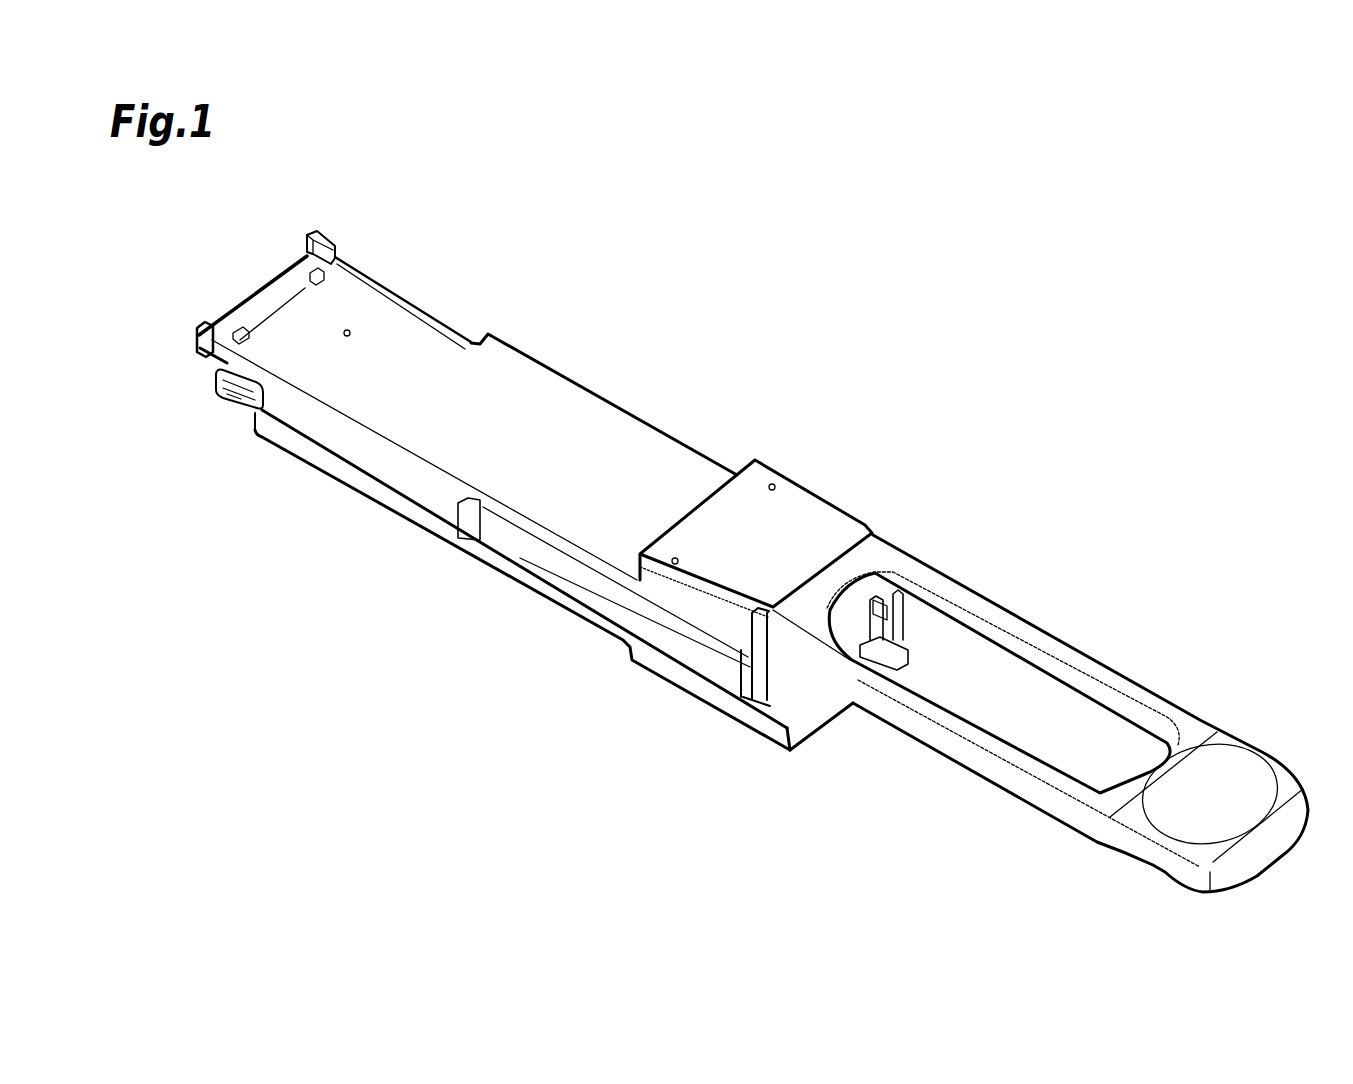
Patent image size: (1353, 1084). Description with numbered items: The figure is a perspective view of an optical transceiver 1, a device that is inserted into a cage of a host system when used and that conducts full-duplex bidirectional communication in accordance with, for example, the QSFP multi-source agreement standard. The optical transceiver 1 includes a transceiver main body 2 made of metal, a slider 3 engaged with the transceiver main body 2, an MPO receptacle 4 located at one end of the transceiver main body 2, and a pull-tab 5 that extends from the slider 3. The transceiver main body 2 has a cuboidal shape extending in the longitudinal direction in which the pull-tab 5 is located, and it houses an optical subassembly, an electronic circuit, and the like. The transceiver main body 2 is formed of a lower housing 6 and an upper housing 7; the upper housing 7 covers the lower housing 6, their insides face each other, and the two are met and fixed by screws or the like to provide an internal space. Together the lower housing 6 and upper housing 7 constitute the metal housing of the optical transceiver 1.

The optical transceiver 1 is at (810, 363).
The transceiver main body 2 is at (615, 247).
The slider 3 is at (693, 657).
The MPO receptacle 4 is at (847, 643).
The pull-tab 5 is at (1057, 628).
The lower housing 6 is at (427, 513).
The upper housing 7 is at (570, 393).